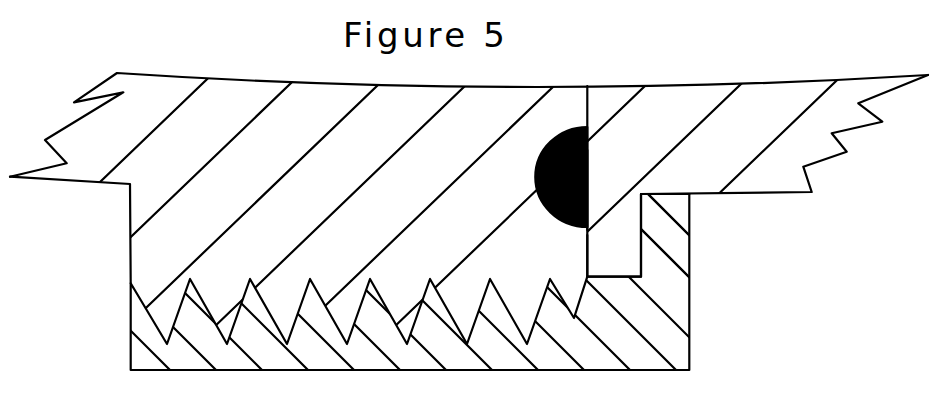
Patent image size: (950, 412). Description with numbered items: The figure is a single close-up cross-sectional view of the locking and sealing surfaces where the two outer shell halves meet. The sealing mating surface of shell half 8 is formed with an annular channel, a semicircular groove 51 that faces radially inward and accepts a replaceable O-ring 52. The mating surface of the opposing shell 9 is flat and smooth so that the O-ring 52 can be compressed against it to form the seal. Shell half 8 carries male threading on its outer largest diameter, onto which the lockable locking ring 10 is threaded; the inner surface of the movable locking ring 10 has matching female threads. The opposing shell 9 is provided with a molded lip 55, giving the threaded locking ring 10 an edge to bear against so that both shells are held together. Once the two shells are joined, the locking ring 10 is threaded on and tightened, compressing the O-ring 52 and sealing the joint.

The shell half 8 is at (163, 257).
The opposing shell 9 is at (688, 107).
The locking ring 10 is at (660, 322).
The semicircular groove 51 is at (535, 182).
The O-ring 52 is at (591, 185).
The molded lip 55 is at (613, 252).